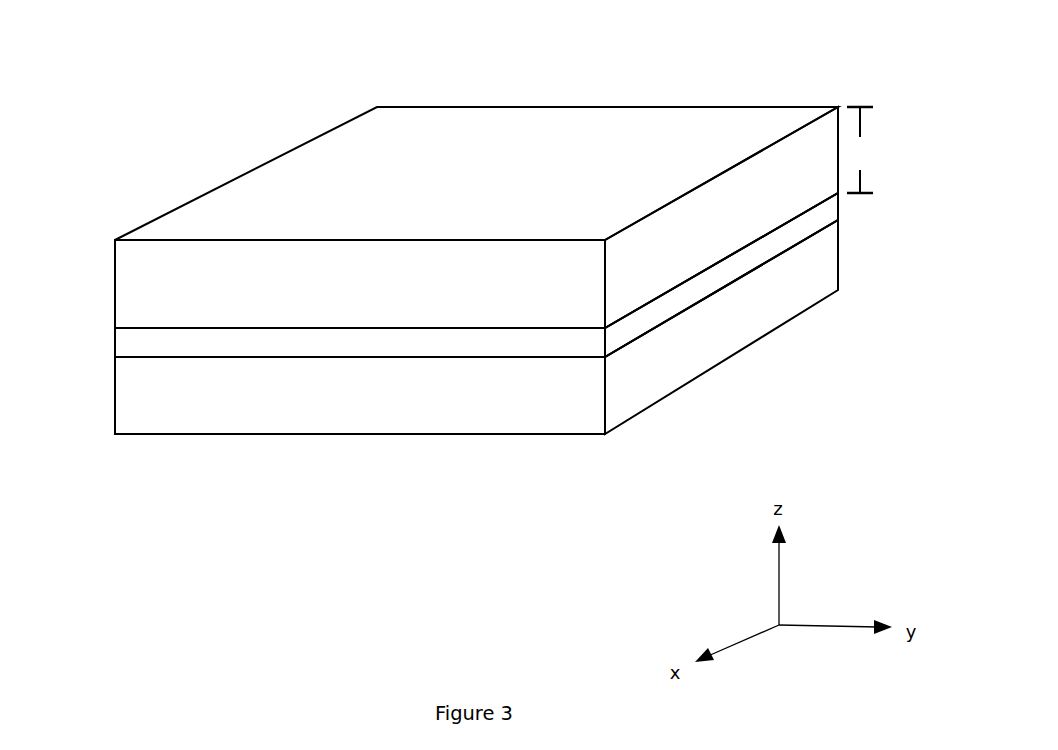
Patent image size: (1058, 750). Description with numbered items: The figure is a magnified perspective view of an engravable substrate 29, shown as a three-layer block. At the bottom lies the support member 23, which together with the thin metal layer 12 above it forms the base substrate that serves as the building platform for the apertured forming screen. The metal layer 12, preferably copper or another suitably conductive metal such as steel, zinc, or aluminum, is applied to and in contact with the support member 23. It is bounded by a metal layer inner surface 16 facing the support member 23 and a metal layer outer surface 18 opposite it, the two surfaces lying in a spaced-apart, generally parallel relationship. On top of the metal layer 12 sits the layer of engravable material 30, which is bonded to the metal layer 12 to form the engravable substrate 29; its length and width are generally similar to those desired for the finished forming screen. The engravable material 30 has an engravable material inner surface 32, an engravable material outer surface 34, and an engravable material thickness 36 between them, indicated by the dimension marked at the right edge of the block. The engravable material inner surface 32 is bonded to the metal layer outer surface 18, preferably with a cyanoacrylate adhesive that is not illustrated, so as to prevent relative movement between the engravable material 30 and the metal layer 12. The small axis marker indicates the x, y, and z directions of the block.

The engravable substrate 29 is at (112, 86).
The engravable material 30 is at (424, 145).
The engravable material outer surface 34 is at (166, 240).
The engravable material thickness 36 is at (860, 150).
The engravable material inner surface 32 is at (150, 326).
The metal layer 12 is at (143, 341).
The metal layer outer surface 18 is at (510, 330).
The metal layer inner surface 16 is at (540, 358).
The support member 23 is at (165, 413).